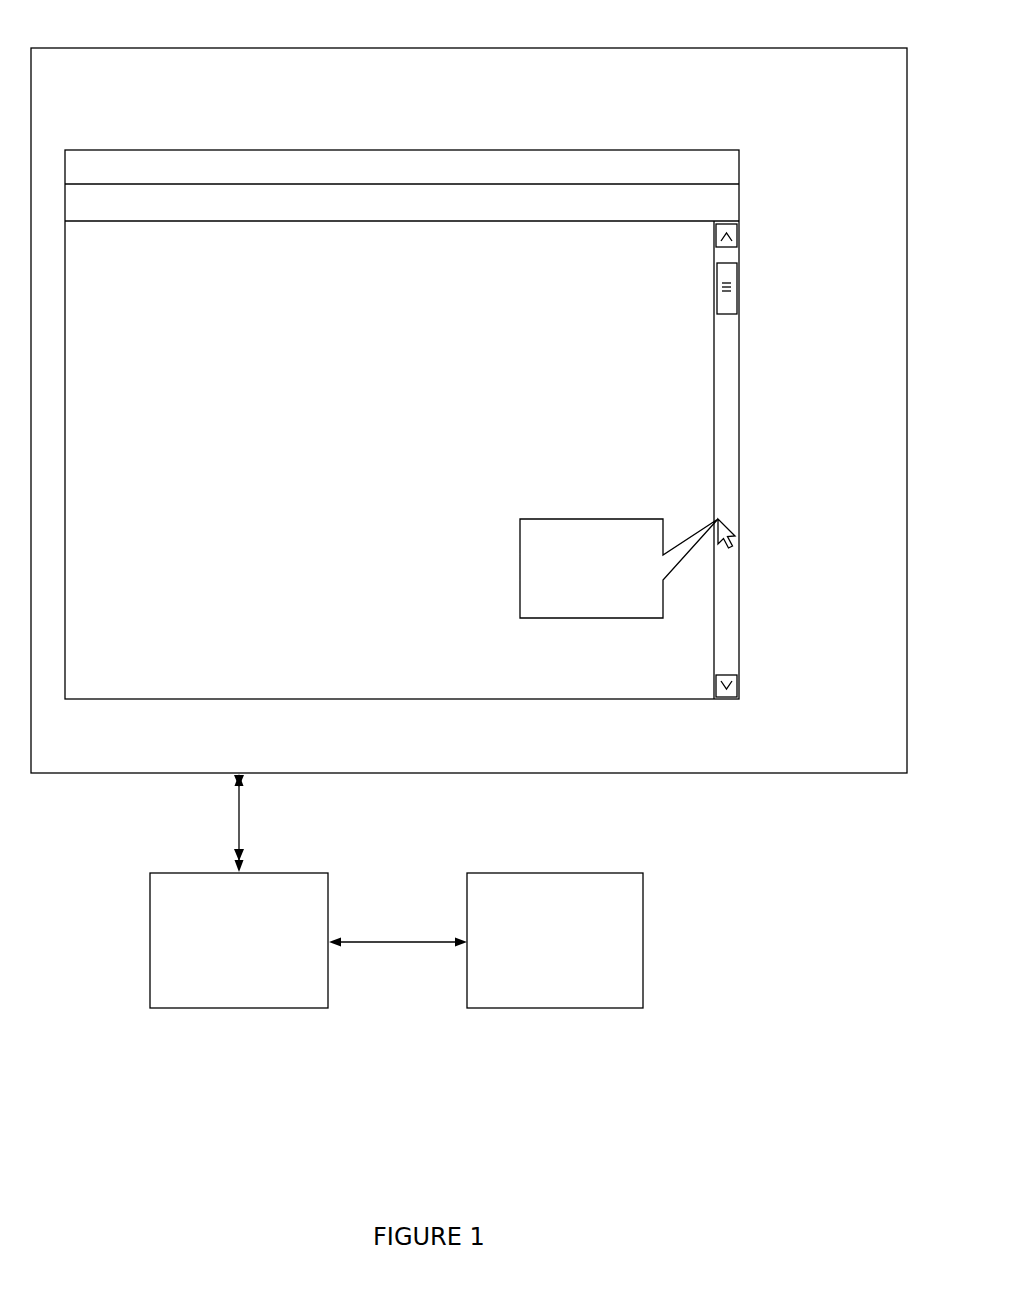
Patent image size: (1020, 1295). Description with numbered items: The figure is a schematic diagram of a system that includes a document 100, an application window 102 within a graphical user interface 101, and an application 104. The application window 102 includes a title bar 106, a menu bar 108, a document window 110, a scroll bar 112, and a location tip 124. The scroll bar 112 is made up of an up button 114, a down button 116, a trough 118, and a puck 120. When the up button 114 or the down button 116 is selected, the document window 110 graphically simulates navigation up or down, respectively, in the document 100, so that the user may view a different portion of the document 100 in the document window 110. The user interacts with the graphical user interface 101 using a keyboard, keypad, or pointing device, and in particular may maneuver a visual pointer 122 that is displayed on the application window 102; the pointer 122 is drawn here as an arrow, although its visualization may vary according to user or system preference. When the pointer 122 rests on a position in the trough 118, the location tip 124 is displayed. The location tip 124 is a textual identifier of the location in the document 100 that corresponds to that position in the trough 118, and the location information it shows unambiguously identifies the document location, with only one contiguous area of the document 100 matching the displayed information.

The document 100 is at (537, 939).
The graphical user interface 101 is at (503, 48).
The application window 102 is at (98, 150).
The application 104 is at (221, 937).
The title bar 106 is at (375, 179).
The menu bar 108 is at (368, 214).
The document window 110 is at (372, 457).
The scroll bar 112 is at (714, 362).
The up button 114 is at (725, 223).
The down button 116 is at (728, 675).
The trough 118 is at (791, 402).
The puck 120 is at (791, 331).
The pointer 122 is at (724, 518).
The location tip 124 is at (573, 564).